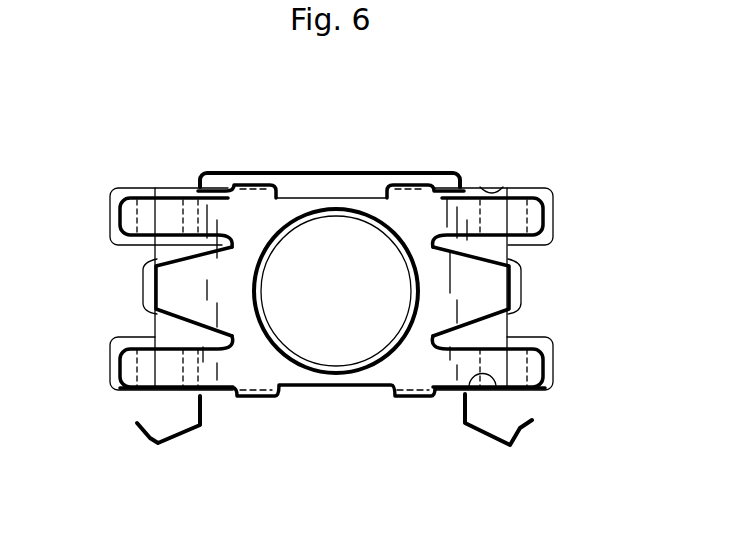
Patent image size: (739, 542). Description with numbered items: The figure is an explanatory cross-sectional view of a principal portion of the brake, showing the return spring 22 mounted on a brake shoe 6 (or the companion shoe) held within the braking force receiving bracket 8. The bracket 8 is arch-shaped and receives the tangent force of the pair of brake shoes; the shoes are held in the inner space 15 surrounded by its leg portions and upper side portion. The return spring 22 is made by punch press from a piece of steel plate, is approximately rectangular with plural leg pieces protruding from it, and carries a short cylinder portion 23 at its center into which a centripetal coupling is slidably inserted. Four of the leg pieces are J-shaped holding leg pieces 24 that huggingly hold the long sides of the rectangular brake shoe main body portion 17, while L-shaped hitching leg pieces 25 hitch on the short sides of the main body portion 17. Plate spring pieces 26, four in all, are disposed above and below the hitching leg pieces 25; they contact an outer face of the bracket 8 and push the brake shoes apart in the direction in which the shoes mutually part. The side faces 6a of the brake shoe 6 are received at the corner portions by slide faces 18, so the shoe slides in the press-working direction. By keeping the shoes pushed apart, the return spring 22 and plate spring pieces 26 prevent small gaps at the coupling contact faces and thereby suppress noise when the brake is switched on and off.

The brake shoe 6 is at (316, 396).
The side face 6a is at (513, 323).
The braking force receiving bracket 8 is at (240, 146).
The inner space 15 is at (358, 330).
The brake shoe main body portion 17 is at (488, 247).
The slide face 18 is at (502, 190).
The return spring 22 is at (311, 206).
The short cylinder portion 23 is at (361, 212).
The J-shaped holding leg piece 24 is at (250, 185).
The L-shaped hitching leg piece 25 is at (140, 285).
The plate spring piece 26 is at (130, 203).